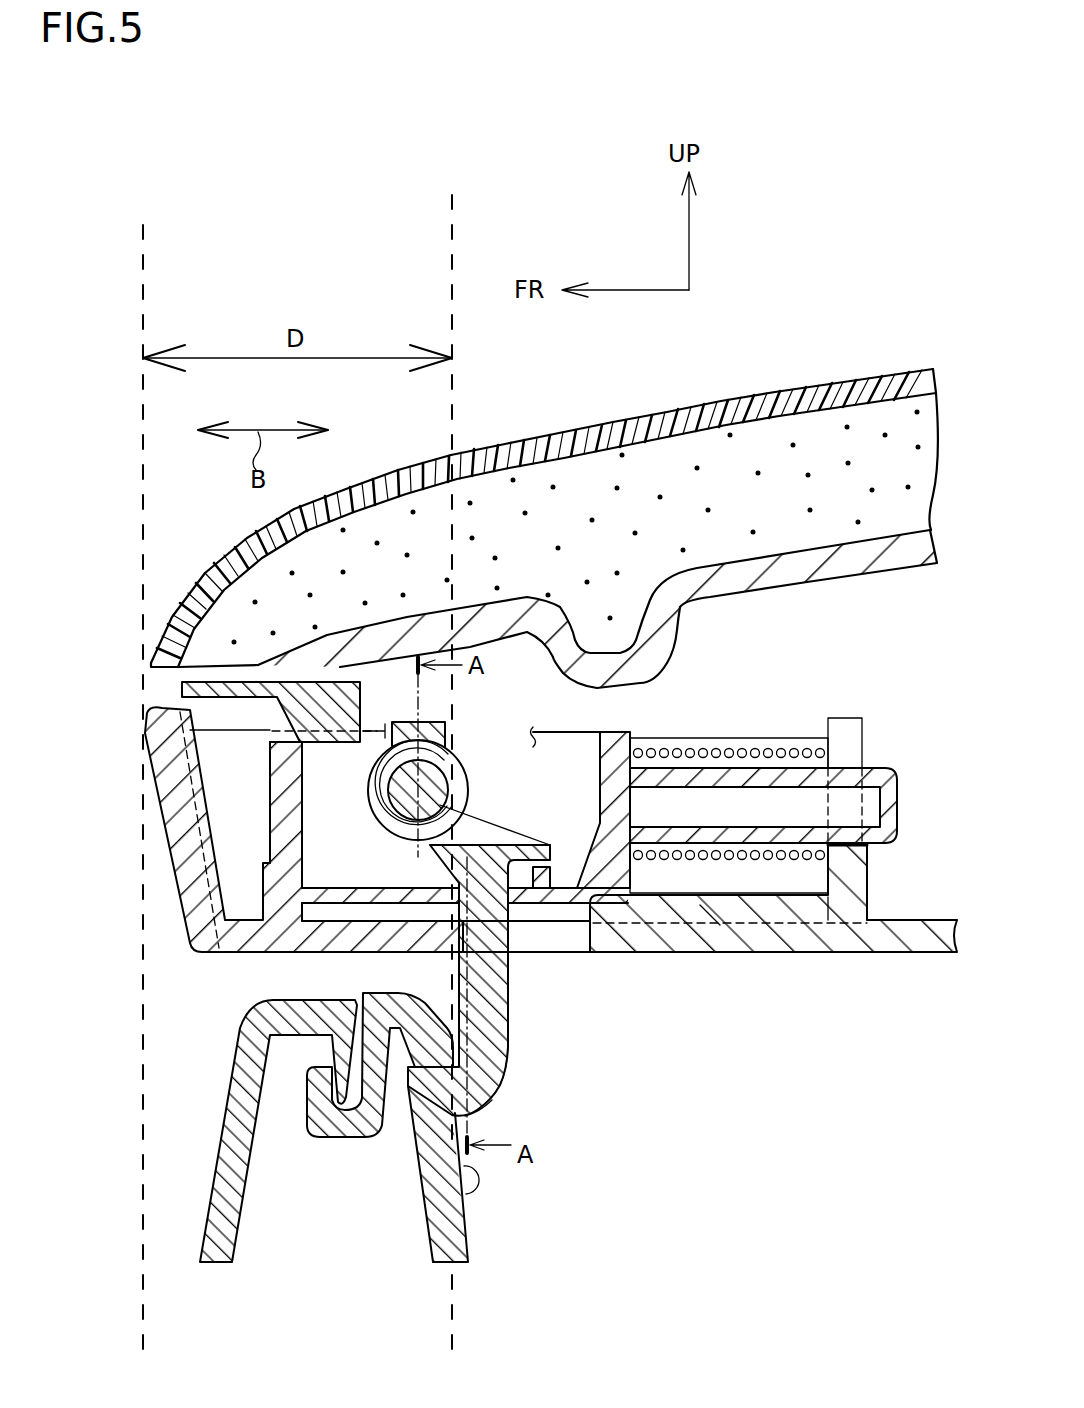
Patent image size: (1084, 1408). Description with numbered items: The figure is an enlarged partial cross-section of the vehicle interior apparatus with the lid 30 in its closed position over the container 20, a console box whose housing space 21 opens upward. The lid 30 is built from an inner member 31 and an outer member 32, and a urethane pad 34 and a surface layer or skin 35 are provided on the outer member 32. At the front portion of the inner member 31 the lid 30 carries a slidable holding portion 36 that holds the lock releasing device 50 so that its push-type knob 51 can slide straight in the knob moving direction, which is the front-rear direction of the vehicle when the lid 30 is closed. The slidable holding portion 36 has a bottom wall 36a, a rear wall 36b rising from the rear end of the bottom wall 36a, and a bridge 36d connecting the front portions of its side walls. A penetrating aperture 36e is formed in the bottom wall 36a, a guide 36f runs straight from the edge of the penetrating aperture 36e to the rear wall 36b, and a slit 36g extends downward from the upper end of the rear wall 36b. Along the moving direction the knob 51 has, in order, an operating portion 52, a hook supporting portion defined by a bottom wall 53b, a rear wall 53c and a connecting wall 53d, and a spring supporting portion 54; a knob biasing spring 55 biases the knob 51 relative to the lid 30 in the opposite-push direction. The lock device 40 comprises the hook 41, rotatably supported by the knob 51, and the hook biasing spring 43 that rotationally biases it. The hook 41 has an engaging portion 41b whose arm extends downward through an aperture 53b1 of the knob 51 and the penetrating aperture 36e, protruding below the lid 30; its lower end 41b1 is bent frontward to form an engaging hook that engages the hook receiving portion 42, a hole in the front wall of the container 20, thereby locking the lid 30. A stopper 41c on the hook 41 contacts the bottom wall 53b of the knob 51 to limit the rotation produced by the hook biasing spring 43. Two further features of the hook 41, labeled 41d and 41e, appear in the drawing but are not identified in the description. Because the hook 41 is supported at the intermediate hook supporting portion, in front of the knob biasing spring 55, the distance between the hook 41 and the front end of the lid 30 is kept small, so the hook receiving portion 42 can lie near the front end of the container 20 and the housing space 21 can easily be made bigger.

The container 20 is at (339, 1151).
The housing space 21 is at (440, 1209).
The lid 30 is at (544, 502).
The inner member 31 is at (912, 942).
The outer member 32 is at (790, 570).
The urethane pad 34 is at (818, 432).
The surface layer 35 is at (712, 400).
The slidable holding portion 36 is at (772, 869).
The bottom wall 36a is at (828, 942).
The rear wall 36b is at (848, 870).
The bridge 36d is at (335, 690).
The penetrating aperture 36e is at (598, 940).
The guide 36f is at (712, 905).
The slit 36g is at (845, 838).
The lock device 40 is at (503, 1078).
The hook 41 is at (497, 969).
The engaging portion 41b is at (490, 1030).
The lower end of the engaging portion 41b1 is at (480, 1098).
The stopper 41c is at (527, 845).
The pivot pin 41d is at (440, 790).
The upper tab 41e is at (432, 722).
The hook receiving portion 42 is at (406, 1090).
The hook biasing spring 43 is at (447, 789).
The lock releasing device 50 is at (232, 945).
The knob 51 is at (202, 829).
The operating portion 52 is at (183, 826).
The bottom wall 53b is at (371, 888).
The aperture 53b1 is at (395, 905).
The rear wall 53c is at (612, 795).
The connecting wall 53d is at (275, 815).
The spring supporting portion 54 is at (845, 780).
The knob biasing spring 55 is at (765, 748).